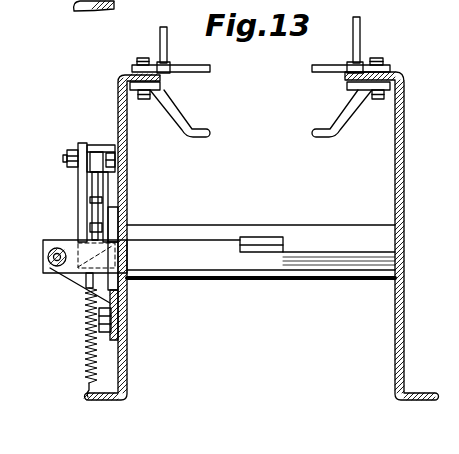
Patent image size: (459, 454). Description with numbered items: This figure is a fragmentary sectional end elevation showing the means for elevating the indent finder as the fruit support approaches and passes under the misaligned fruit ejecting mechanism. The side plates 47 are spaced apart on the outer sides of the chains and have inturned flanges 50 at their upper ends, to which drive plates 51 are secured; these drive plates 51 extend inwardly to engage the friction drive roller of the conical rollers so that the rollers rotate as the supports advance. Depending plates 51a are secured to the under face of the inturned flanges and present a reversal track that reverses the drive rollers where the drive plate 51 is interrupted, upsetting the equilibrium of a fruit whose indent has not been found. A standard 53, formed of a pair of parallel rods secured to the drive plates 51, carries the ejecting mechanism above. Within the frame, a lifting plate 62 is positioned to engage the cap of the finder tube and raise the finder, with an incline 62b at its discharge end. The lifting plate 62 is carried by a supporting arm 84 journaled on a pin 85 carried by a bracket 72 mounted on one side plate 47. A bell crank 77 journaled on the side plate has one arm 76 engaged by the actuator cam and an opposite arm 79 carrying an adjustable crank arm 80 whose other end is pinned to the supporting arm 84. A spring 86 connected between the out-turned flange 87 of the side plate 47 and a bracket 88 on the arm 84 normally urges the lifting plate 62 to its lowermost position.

The side plate 47 is at (118, 114).
The inturned flange 50 is at (127, 77).
The drive plate 51 is at (190, 72).
The depending plate 51a is at (177, 118).
The standard 53 is at (167, 46).
The lifting plate 62 is at (275, 238).
The incline 62b is at (253, 238).
The bracket 72 is at (125, 319).
The arm of bell crank 76 is at (83, 218).
The bell crank 77 is at (80, 147).
The opposite arm 79 is at (80, 145).
The adjustable crank arm 80 is at (90, 202).
The supporting arm 84 is at (242, 258).
The pin 85 is at (45, 258).
The spring 86 is at (88, 352).
The out-turned flange 87 is at (108, 401).
The bracket 88 is at (87, 281).